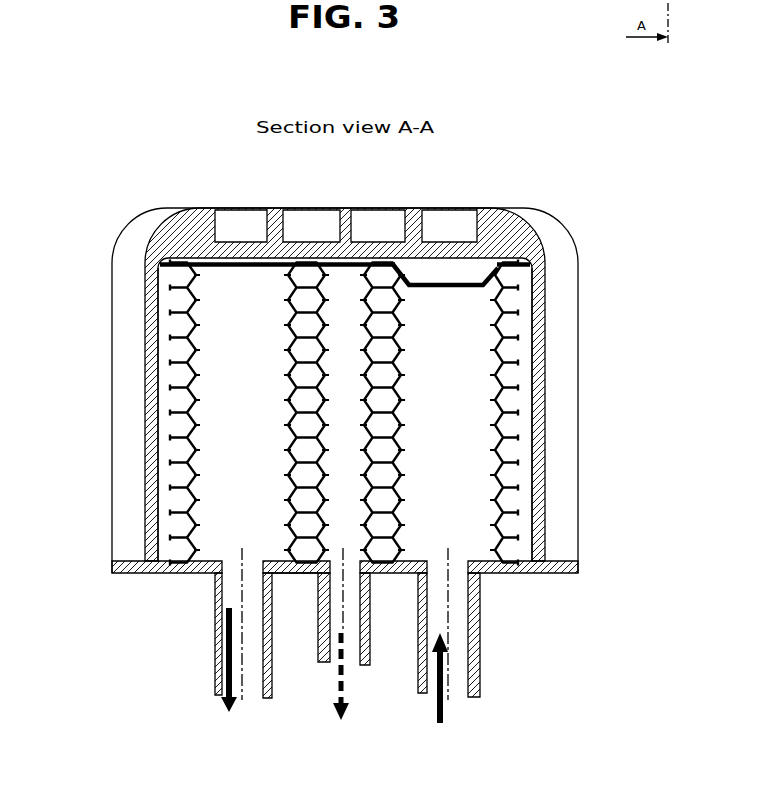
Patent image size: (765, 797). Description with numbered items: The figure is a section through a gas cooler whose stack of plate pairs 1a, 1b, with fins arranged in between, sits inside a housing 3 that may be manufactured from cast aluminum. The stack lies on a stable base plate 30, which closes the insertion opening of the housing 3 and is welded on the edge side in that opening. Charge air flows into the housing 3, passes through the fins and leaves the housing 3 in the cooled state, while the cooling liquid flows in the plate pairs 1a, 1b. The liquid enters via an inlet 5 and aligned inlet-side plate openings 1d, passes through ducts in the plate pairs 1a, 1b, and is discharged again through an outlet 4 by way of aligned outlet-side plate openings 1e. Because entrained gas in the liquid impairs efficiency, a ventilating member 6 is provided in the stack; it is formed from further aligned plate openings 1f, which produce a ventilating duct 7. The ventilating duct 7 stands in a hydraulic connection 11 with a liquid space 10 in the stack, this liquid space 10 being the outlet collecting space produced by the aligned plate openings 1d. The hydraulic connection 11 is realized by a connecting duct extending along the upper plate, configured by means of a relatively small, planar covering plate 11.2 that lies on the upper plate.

The housing 3 is at (535, 278).
The base plate 30 is at (495, 573).
The hydraulic connection 11 is at (298, 265).
The covering plate 11.2 is at (322, 265).
The plate pair 1a is at (498, 302).
The plate pair 1b is at (505, 298).
The inlet-side plate openings 1d is at (510, 330).
The outlet-side plate openings 1e is at (190, 492).
The plate openings 1f is at (367, 525).
The ventilating member 6 is at (363, 633).
The ventilating duct 7 is at (342, 303).
The liquid space 10 is at (253, 404).
The outlet 4 is at (221, 635).
The inlet 5 is at (433, 638).